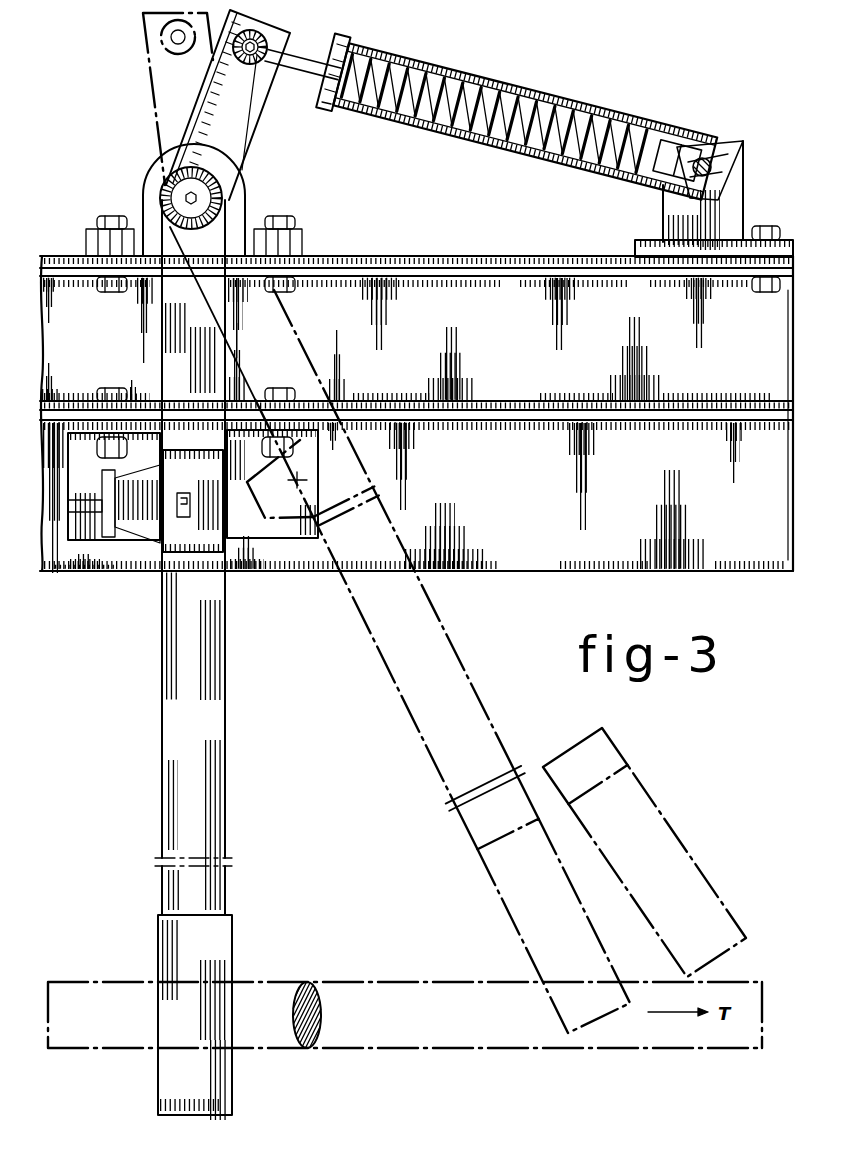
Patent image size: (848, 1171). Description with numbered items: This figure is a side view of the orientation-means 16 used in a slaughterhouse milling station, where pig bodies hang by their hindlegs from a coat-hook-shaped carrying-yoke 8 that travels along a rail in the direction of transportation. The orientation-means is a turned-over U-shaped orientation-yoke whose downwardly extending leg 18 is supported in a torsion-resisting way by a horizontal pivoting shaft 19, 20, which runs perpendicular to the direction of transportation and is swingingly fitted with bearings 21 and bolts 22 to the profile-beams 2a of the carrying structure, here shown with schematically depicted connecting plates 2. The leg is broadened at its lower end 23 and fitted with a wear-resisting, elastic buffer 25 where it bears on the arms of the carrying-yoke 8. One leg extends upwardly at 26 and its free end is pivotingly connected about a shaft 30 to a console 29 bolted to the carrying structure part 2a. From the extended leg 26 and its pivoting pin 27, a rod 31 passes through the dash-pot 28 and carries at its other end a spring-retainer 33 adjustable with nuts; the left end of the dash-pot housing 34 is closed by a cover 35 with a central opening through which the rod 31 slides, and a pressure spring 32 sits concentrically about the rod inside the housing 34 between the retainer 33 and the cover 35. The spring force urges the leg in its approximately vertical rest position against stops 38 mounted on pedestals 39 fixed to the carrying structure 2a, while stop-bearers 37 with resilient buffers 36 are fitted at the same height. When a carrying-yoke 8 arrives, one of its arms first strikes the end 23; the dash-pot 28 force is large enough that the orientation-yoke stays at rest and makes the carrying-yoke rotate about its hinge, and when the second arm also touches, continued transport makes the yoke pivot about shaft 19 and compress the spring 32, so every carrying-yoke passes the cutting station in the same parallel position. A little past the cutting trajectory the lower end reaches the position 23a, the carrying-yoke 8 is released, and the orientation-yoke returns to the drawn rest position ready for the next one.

The connecting plate 2 is at (721, 553).
The profile-beam of the carrying structure 2a is at (440, 300).
The carrying-yoke 8 is at (305, 982).
The orientation-means 16 is at (160, 657).
The leg of the orientation-yoke 18 is at (176, 752).
The pivoting shaft 19 is at (162, 196).
The shaft 20 is at (194, 200).
The bearing 21 is at (147, 243).
The bolt 22 is at (100, 218).
The end of the orientation-yoke leg 23 is at (542, 903).
The released position of the lower end 23a is at (693, 888).
The buffer 25 is at (158, 930).
The upwardly extended leg 26 is at (240, 108).
The pivoting pin 27 is at (262, 88).
The dash-pot 28 is at (529, 131).
The console 29 is at (664, 207).
The shaft 30 is at (705, 158).
The rod 31 is at (320, 52).
The pressure spring 32 is at (578, 110).
The spring-retainer 33 is at (660, 140).
The spring housing tube 34 is at (437, 66).
The cover 35 is at (334, 34).
The resilient buffer 36 is at (133, 538).
The stop-bearer 37 is at (165, 548).
The stop 38 is at (107, 540).
The pedestal 39 is at (92, 432).